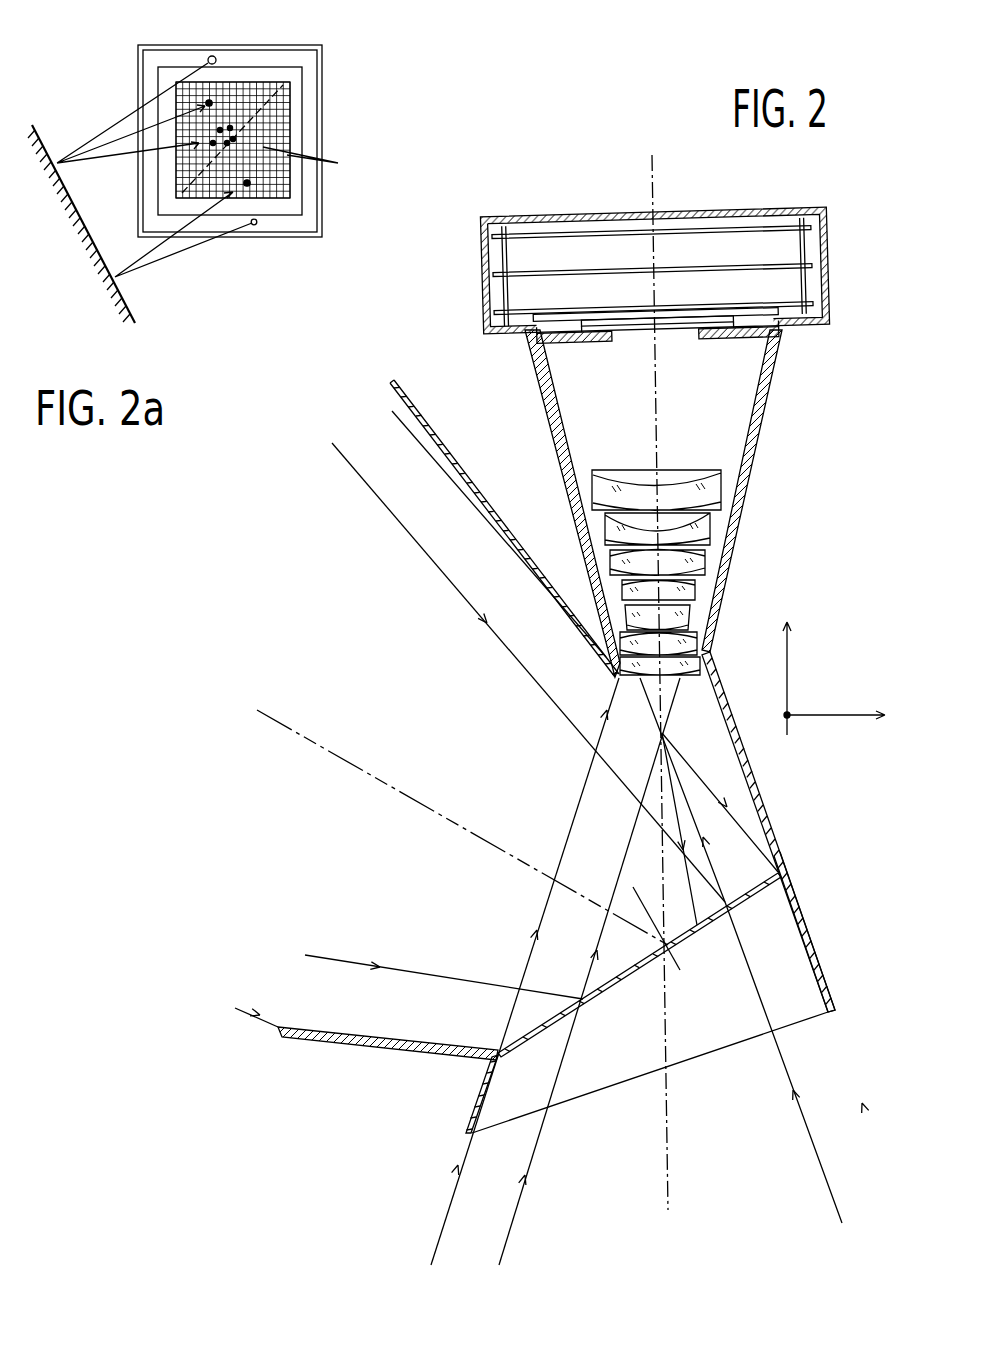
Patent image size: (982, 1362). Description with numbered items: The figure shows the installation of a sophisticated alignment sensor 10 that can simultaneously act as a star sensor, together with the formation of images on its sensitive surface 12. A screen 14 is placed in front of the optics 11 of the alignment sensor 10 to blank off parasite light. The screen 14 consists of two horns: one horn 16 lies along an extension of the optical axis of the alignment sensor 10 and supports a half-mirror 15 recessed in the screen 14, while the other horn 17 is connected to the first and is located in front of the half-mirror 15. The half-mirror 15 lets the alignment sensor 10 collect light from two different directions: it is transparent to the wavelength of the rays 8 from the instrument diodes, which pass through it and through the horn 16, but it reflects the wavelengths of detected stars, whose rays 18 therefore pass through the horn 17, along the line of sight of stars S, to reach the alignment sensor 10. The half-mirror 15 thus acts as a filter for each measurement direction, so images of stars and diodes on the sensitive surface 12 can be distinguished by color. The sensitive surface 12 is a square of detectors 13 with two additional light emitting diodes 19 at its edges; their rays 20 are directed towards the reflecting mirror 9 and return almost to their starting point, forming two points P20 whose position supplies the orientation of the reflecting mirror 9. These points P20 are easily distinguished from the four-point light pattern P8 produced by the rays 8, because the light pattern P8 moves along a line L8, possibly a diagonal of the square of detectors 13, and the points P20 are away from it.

In FIG. 2, the rays 8 is at (826, 1183).
In FIG. 2a, the reflecting mirror 9 is at (123, 297).
In FIG. 2, the alignment sensor 10 is at (851, 293).
In FIG. 2, the optics 11 is at (761, 542).
In FIG. 2a, the sensitive surface 12 is at (280, 74).
In FIG. 2a, the square of detectors 13 is at (322, 164).
In FIG. 2, the screen 14 is at (794, 830).
In FIG. 2, the half-mirror 15 is at (637, 987).
In FIG. 2, the horn 16 is at (822, 960).
In FIG. 2, the horn 17 is at (392, 382).
In FIG. 2, the rays 18 is at (378, 963).
In FIG. 2a, the light emitting diodes 19 is at (247, 230).
In FIG. 2a, the rays 20 is at (157, 263).
In FIG. 2, the line of sight of stars S is at (295, 740).
In FIG. 2a, the light pattern P8 is at (197, 144).
In FIG. 2a, the points P20 is at (250, 183).
In FIG. 2a, the line L8 is at (287, 88).